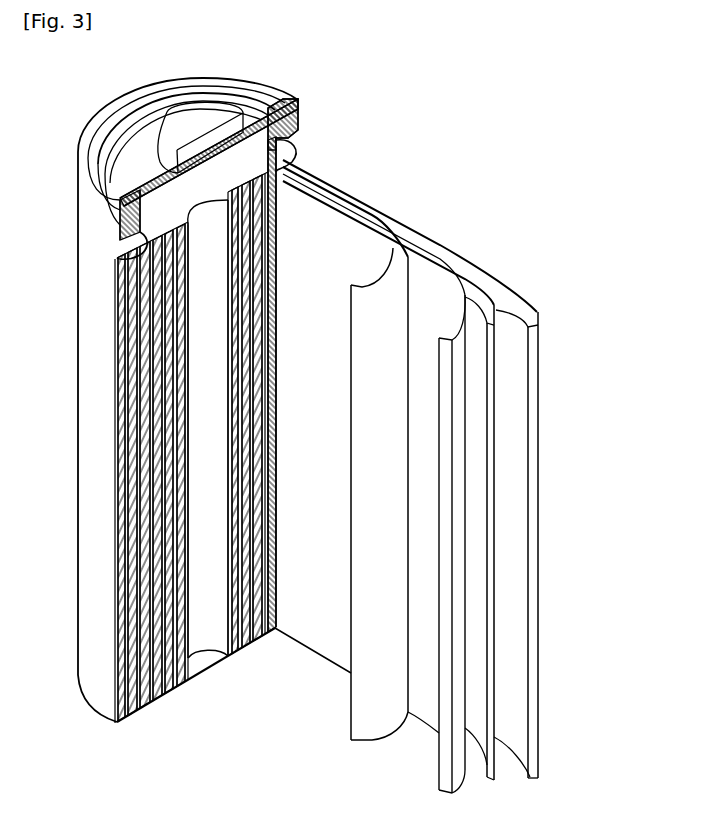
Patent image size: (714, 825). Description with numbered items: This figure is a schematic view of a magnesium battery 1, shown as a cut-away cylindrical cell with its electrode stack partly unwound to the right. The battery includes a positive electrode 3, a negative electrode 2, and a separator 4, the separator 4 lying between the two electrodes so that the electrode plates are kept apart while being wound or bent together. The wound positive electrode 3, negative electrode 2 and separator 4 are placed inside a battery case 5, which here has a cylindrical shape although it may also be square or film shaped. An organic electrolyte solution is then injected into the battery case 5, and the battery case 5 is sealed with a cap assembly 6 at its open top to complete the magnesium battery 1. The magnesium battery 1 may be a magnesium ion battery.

The magnesium battery 1 is at (397, 106).
The negative electrode 2 is at (525, 305).
The positive electrode 3 is at (453, 293).
The separator 4 is at (392, 250).
The battery case 5 is at (82, 440).
The cap assembly 6 is at (184, 117).